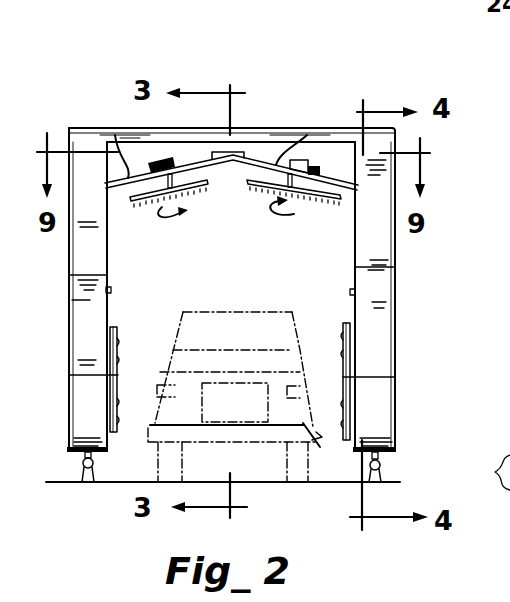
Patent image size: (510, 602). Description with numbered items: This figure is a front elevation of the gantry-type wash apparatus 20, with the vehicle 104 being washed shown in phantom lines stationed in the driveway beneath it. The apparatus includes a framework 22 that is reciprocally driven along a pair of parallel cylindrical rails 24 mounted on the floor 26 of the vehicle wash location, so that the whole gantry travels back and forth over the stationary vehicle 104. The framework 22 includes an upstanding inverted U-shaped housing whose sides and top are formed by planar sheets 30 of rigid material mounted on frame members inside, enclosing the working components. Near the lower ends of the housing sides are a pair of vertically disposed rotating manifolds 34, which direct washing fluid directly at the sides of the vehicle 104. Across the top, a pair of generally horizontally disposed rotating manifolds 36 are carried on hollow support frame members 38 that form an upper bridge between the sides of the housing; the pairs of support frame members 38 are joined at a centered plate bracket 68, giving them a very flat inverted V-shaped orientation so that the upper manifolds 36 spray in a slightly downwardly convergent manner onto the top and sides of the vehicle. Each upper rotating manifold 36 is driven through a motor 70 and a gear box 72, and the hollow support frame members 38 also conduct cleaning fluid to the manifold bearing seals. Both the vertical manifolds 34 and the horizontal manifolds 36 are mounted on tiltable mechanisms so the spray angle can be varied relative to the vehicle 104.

The wash apparatus 20 is at (92, 88).
The framework 22 is at (353, 268).
The parallel rails 24 is at (80, 466).
The floor 26 is at (122, 481).
The planar sheets 30 is at (80, 250).
The vertically disposed rotating manifolds 34 is at (112, 330).
The horizontally disposed rotating manifolds 36 is at (248, 182).
The support frame members 38 is at (115, 135).
The plate bracket 68 is at (234, 161).
The motor 70 is at (172, 167).
The gear box 72 is at (153, 162).
The vehicle 104 is at (320, 447).